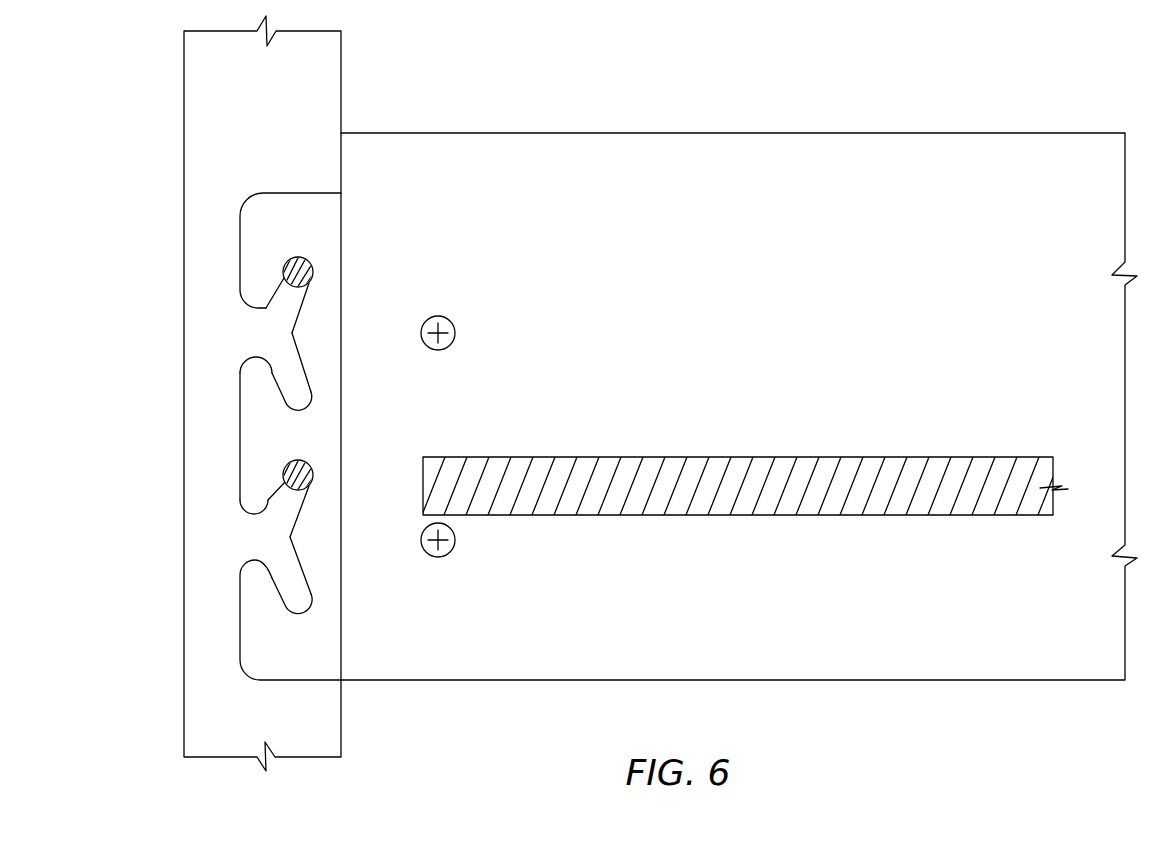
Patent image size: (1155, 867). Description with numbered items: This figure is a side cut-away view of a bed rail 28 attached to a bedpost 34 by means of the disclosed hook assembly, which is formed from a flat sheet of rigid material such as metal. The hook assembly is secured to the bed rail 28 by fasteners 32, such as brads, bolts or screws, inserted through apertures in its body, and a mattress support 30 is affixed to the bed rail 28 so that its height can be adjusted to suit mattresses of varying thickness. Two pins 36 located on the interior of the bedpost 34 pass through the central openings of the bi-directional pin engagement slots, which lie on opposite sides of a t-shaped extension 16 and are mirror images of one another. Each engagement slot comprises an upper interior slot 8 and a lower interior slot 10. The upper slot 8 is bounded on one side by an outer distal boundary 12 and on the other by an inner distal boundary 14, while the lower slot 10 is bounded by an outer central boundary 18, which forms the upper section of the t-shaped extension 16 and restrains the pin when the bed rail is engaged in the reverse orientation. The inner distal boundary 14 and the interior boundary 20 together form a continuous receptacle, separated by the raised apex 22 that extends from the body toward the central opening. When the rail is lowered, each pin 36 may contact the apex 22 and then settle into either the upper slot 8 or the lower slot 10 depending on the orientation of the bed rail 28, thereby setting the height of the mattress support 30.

The upper interior slot 8 is at (277, 320).
The lower interior slot 10 is at (287, 398).
The outer distal boundary 12 is at (284, 275).
The inner distal boundary 14 is at (308, 290).
The t-shaped extension 16 is at (242, 435).
The outer central boundary 18 is at (273, 377).
The interior boundary 20 is at (305, 368).
The apex 22 is at (292, 333).
The bed rail 28 is at (758, 200).
The mattress support 30 is at (780, 515).
The fasteners 32 is at (455, 333).
The bedpost 34 is at (250, 102).
The pin 36 is at (312, 264).